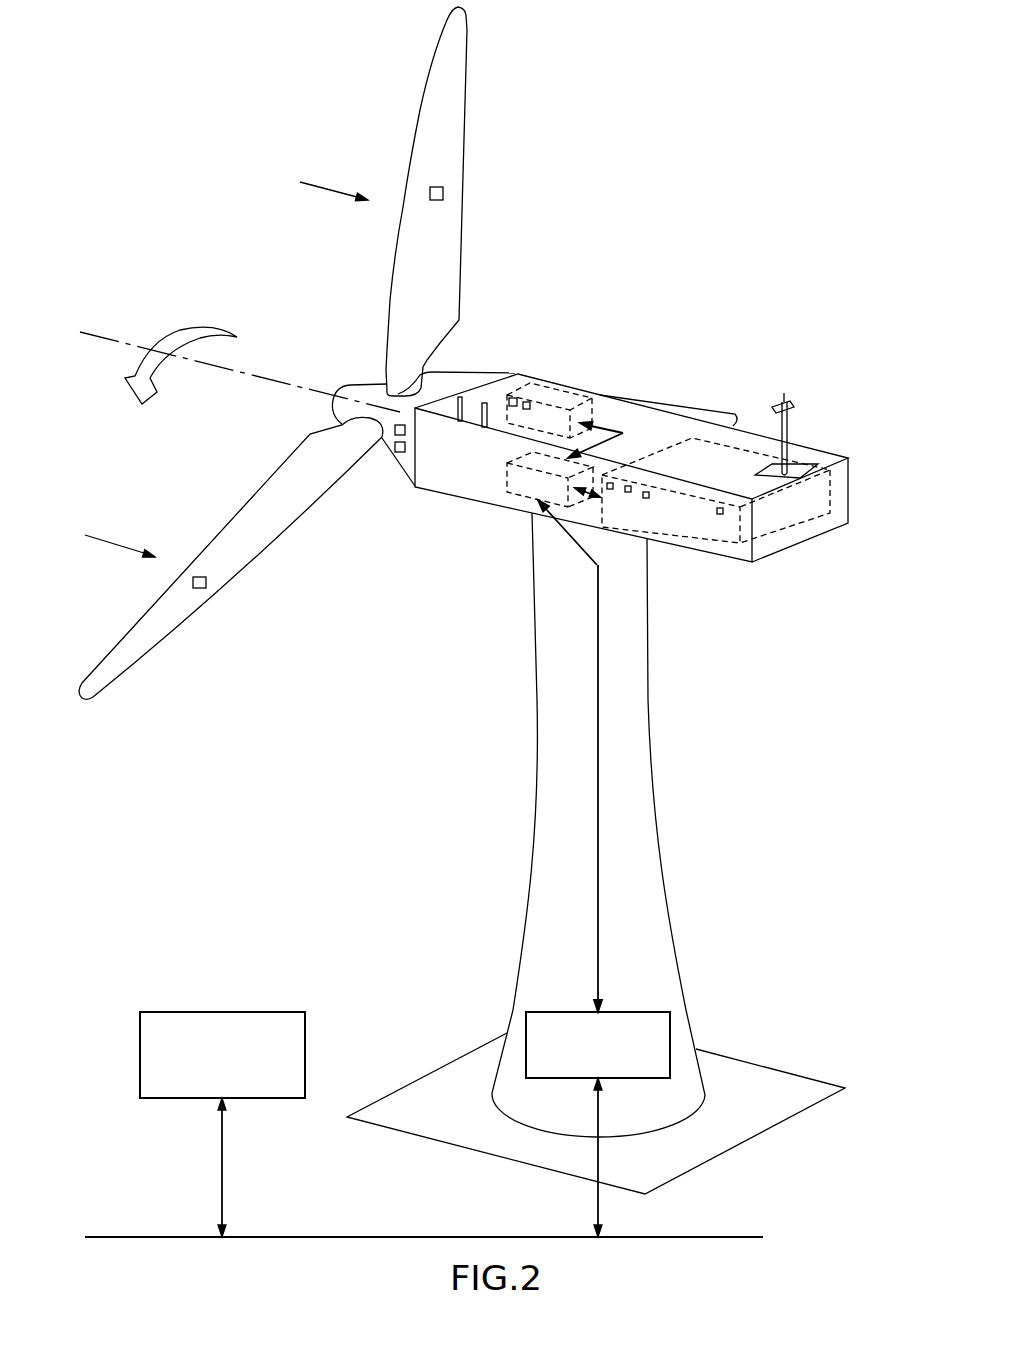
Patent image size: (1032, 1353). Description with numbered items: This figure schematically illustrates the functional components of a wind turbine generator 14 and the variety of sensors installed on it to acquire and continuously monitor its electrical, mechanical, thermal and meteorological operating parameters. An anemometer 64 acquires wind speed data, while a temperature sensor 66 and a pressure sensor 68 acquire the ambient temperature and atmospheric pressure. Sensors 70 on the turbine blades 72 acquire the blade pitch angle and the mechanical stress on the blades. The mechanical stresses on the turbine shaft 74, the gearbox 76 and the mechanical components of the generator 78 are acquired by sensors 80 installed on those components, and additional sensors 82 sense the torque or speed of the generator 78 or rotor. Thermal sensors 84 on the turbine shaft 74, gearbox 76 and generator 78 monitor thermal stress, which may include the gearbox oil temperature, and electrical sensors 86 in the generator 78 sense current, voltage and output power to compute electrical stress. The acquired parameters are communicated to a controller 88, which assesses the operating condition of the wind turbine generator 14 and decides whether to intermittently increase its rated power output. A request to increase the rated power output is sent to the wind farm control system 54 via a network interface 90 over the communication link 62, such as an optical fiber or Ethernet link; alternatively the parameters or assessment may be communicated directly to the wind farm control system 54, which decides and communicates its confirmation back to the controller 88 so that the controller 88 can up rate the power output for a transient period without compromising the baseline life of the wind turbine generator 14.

The wind turbine generator 14 is at (790, 76).
The wind farm control system 54 is at (222, 1010).
The communication link 62 is at (291, 1225).
The anemometer 64 is at (786, 397).
The temperature sensor 66 is at (456, 420).
The pressure sensor 68 is at (482, 423).
The sensors 70 is at (443, 194).
The turbine blades 72 is at (461, 104).
The turbine shaft 74 is at (358, 386).
The gearbox 76 is at (577, 395).
The generator 78 is at (820, 497).
The sensors 80 is at (513, 398).
The sensors 82 is at (718, 515).
The thermal sensors 84 is at (527, 402).
The electrical sensors 86 is at (612, 483).
The controller 88 is at (517, 484).
The network interface 90 is at (622, 1010).